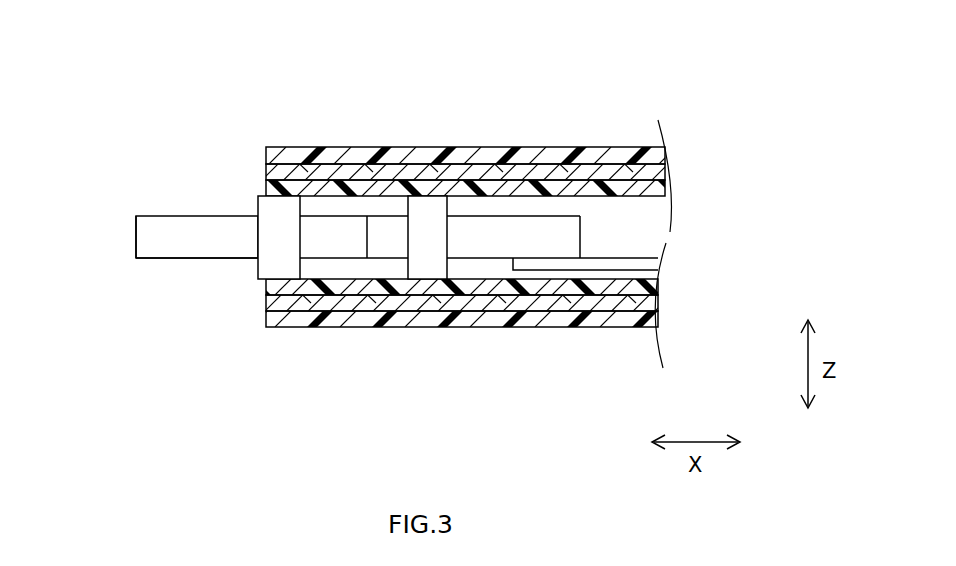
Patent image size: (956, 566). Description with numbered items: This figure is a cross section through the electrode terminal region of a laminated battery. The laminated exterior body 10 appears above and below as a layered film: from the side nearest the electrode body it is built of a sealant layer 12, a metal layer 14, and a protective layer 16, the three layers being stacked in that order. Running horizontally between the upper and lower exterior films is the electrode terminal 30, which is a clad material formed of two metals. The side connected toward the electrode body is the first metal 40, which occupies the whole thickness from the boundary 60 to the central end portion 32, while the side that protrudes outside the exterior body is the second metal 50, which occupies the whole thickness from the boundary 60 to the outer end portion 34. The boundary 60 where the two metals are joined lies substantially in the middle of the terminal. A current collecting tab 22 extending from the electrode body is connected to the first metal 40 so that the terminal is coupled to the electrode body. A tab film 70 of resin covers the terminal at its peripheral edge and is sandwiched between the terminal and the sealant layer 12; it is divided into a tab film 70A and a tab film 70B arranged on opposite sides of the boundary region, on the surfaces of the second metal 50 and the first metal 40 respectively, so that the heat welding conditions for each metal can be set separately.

The laminated exterior body 10 is at (538, 176).
The sealant layer 12 is at (510, 200).
The metal layer 14 is at (661, 170).
The protective layer 16 is at (662, 157).
The current collecting tab 22 is at (592, 268).
The electrode terminal 30 is at (203, 215).
The central end portion 32 is at (581, 240).
The outer end portion 34 is at (136, 235).
The first metal 40 is at (447, 214).
The second metal 50 is at (205, 258).
The boundary 60 is at (368, 240).
The tab film 70 is at (352, 154).
The tab film 70A is at (283, 208).
The tab film 70B is at (423, 179).